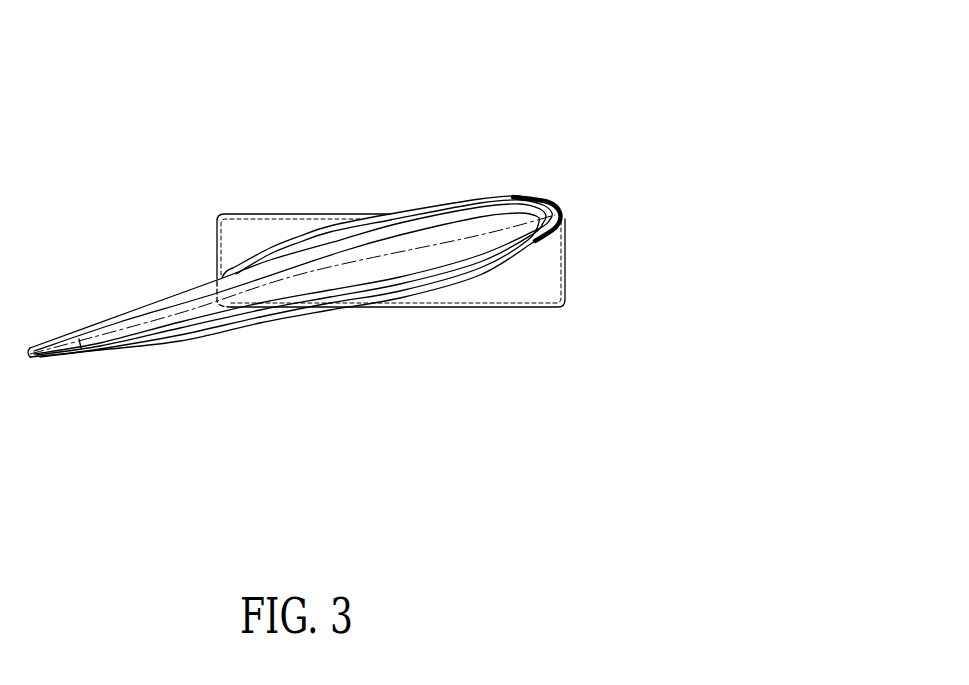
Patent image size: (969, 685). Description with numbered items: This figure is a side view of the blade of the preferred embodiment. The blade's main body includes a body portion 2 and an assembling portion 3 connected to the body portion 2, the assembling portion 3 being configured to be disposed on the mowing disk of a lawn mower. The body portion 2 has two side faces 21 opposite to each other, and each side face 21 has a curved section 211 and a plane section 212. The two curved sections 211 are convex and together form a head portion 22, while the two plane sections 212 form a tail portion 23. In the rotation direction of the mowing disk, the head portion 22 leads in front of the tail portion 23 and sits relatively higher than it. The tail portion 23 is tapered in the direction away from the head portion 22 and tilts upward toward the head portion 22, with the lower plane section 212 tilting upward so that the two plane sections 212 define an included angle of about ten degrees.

The body portion 2 is at (295, 241).
The side face 21 is at (295, 194).
The curved section 211 is at (443, 204).
The plane section 212 is at (141, 308).
The head portion 22 is at (440, 233).
The tail portion 23 is at (205, 302).
The assembling portion 3 is at (535, 288).